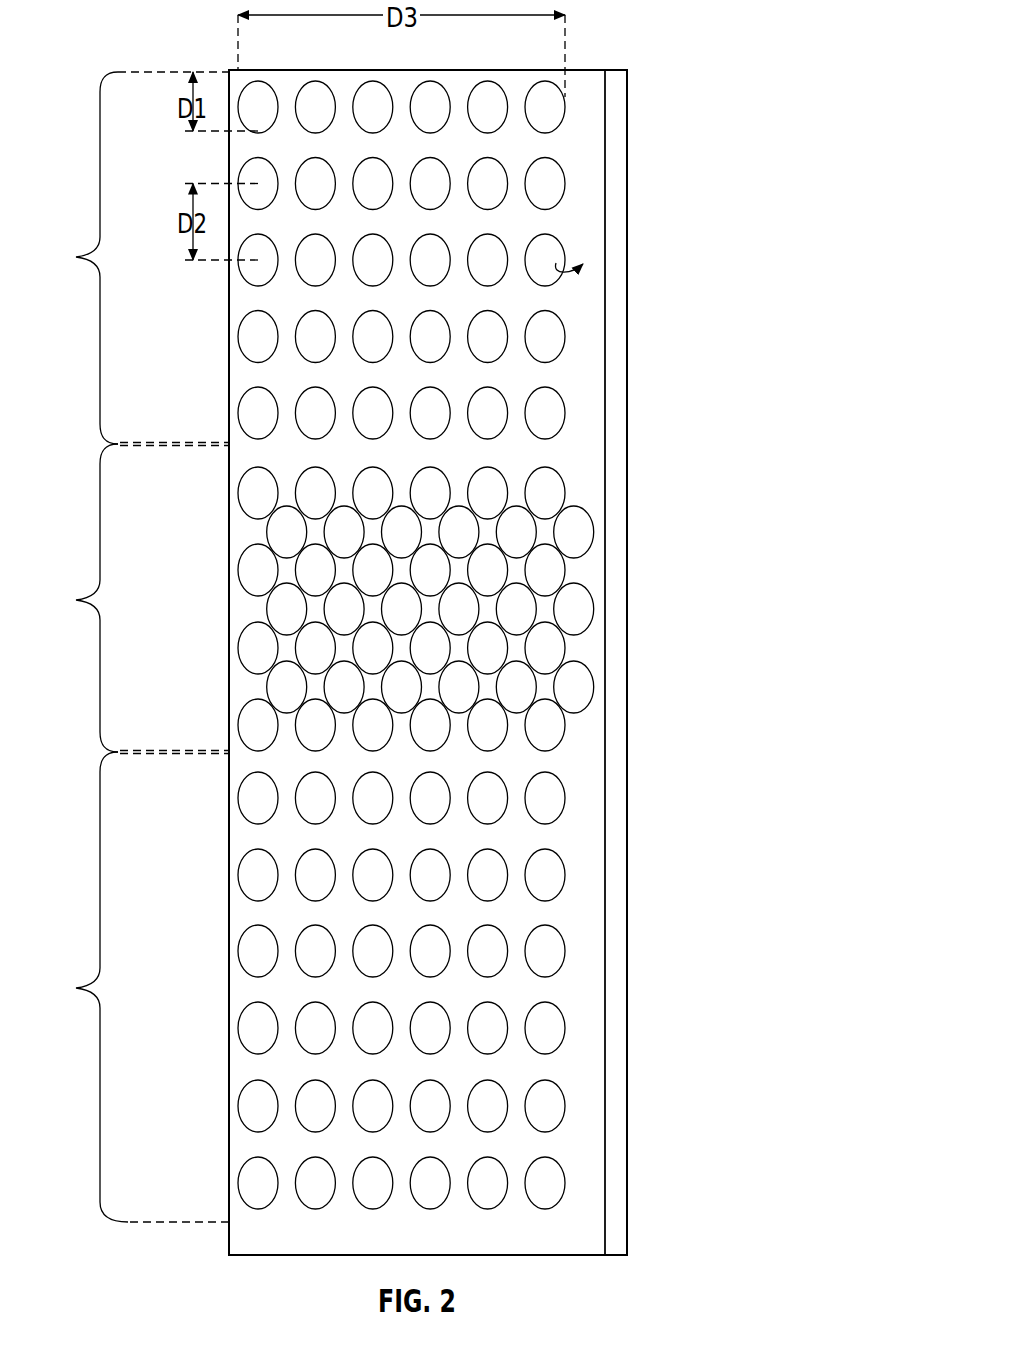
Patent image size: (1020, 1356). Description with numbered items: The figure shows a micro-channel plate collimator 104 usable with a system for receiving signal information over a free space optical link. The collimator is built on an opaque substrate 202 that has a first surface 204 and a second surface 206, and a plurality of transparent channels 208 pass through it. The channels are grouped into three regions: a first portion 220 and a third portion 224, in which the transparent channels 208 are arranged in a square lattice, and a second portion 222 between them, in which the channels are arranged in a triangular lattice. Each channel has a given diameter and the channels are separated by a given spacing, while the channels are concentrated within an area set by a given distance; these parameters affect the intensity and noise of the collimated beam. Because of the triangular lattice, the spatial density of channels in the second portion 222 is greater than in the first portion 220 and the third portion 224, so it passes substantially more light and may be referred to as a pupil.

The micro-channel plate collimator 104 is at (134, 34).
The opaque substrate 202 is at (618, 87).
The first surface 204 is at (557, 253).
The second surface 206 is at (633, 227).
The transparent channels 208 is at (547, 415).
The first portion 220 is at (74, 258).
The second portion 222 is at (74, 598).
The third portion 224 is at (79, 987).